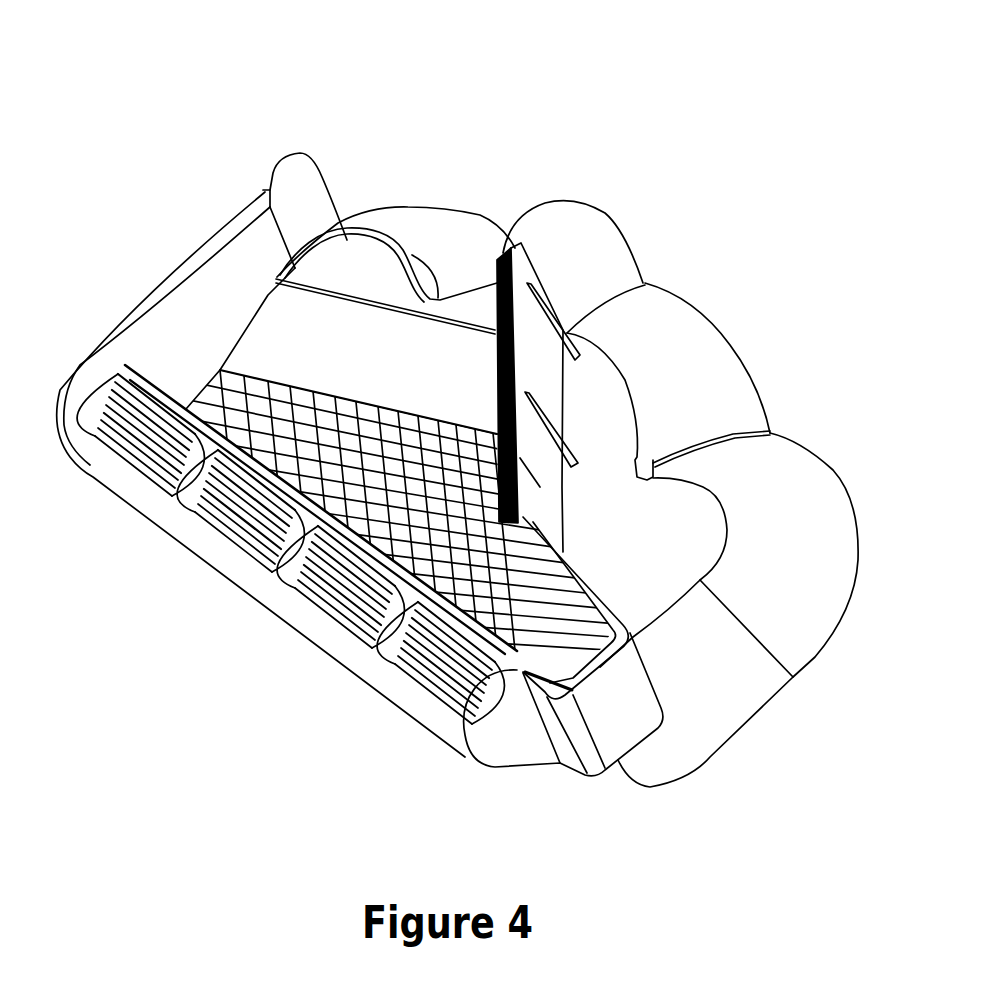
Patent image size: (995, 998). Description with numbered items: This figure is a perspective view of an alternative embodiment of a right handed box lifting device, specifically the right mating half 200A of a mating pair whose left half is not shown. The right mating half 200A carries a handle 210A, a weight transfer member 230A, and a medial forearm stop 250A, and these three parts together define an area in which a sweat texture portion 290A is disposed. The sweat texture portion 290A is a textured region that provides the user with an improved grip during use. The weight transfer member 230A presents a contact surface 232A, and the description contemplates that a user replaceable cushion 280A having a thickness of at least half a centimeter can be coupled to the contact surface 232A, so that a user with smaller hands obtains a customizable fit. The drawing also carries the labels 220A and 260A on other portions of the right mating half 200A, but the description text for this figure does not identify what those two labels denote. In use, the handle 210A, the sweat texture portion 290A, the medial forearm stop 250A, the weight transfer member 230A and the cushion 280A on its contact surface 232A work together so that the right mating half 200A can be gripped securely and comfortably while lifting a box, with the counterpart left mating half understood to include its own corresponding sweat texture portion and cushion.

The right mating half 200A is at (510, 130).
The handle 210A is at (278, 592).
The saddle body 220A is at (793, 537).
The weight transfer member 230A is at (545, 375).
The contact surface 232A is at (508, 343).
The medial forearm stop 250A is at (313, 202).
The cushion 260A is at (349, 272).
The user replaceable cushion 280A is at (510, 250).
The sweat texture portion 290A is at (467, 570).